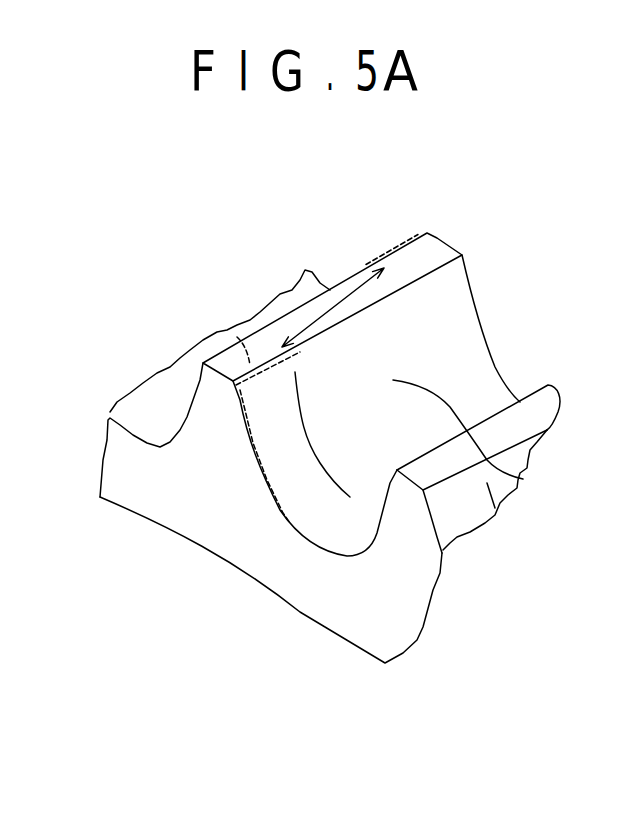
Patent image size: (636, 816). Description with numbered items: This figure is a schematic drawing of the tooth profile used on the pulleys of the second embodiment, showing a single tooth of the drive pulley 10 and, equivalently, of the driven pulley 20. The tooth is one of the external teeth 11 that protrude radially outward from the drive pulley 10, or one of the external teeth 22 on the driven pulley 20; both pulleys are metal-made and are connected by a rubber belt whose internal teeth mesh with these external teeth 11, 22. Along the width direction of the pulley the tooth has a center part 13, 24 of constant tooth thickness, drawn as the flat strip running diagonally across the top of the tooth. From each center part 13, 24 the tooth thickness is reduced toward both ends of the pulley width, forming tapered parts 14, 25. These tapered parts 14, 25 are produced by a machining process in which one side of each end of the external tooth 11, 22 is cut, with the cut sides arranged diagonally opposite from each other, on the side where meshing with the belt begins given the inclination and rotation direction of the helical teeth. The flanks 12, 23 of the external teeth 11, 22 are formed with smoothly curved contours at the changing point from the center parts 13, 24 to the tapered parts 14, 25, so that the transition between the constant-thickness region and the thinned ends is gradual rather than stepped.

The drive pulley 10 is at (267, 513).
The driven pulley 20 is at (203, 535).
The external teeth 11 is at (349, 307).
The external teeth 22 is at (465, 228).
The flank 12 is at (510, 466).
The flank 23 is at (523, 479).
The center part 13 is at (336, 307).
The center part 24 is at (343, 317).
The tapered part 14 is at (280, 358).
The tapered part 25 is at (237, 337).